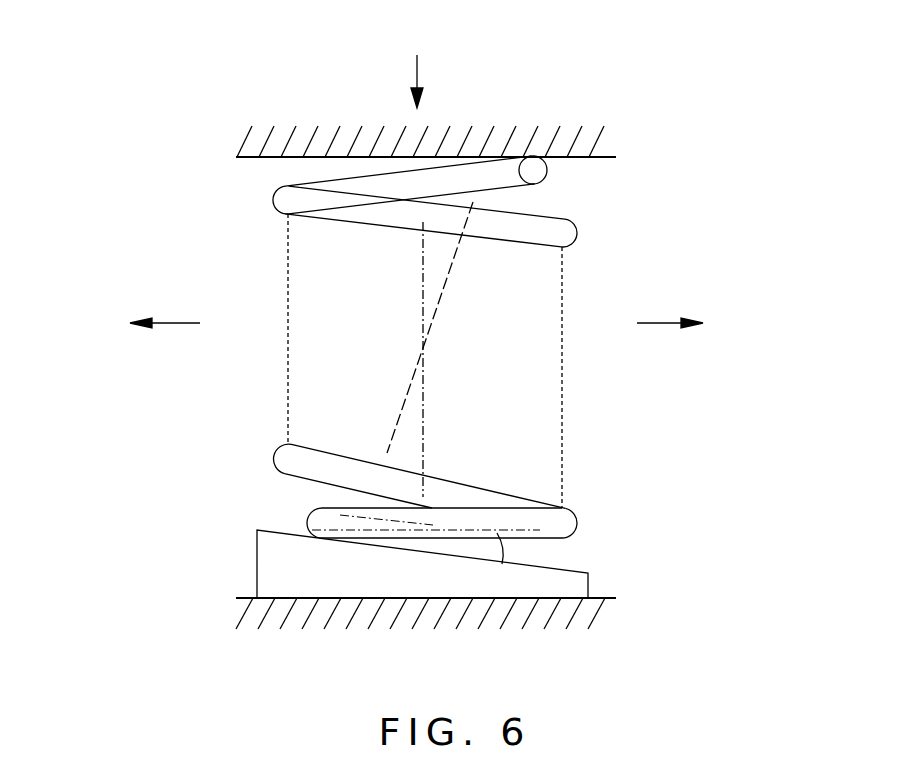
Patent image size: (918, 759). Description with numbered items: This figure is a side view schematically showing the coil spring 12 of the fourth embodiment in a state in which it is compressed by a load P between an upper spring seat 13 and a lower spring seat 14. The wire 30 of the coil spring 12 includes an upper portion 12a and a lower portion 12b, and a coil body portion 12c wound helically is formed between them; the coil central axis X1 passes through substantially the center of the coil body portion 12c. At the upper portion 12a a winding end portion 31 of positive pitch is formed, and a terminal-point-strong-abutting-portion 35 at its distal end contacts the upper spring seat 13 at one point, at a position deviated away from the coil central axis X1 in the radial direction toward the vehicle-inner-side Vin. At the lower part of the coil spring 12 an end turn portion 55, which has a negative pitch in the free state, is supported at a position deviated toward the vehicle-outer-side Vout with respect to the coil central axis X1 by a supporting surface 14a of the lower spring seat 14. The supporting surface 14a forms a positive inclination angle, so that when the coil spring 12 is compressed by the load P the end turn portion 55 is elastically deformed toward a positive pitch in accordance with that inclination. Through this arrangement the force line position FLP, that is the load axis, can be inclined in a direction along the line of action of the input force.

The coil spring 12 is at (587, 235).
The upper portion 12a is at (320, 181).
The lower portion 12b is at (305, 520).
The coil body portion 12c is at (275, 456).
The upper spring seat 13 is at (596, 140).
The lower spring seat 14 is at (591, 612).
The supporting surface 14a is at (455, 548).
The wire 30 is at (493, 237).
The winding end portion 31 is at (503, 181).
The terminal-point-strong-abutting-portion 35 is at (540, 155).
The end turn portion 55 is at (415, 547).
The coil central axis X1 is at (424, 393).
The force line position FLP is at (416, 373).
The load P is at (416, 66).
The vehicle-outer-side Vout is at (140, 326).
The vehicle-inner-side Vin is at (690, 326).